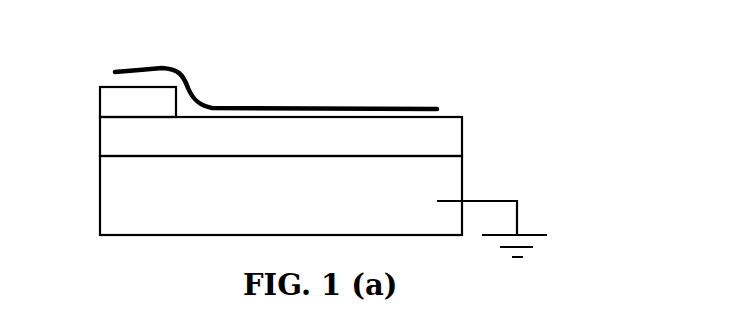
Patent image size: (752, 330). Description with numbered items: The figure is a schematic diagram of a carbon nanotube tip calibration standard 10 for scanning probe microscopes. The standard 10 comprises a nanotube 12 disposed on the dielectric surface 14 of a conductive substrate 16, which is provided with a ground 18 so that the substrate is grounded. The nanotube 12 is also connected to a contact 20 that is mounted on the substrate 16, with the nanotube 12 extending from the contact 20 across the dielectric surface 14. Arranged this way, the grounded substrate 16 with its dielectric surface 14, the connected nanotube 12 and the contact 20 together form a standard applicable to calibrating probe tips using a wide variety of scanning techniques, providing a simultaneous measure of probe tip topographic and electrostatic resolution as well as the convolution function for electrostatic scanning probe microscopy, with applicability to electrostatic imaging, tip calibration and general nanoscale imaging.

The standard 10 is at (545, 73).
The nanotube 12 is at (223, 106).
The dielectric surface 14 is at (100, 137).
The substrate 16 is at (100, 193).
The ground 18 is at (488, 200).
The contact 20 is at (100, 95).